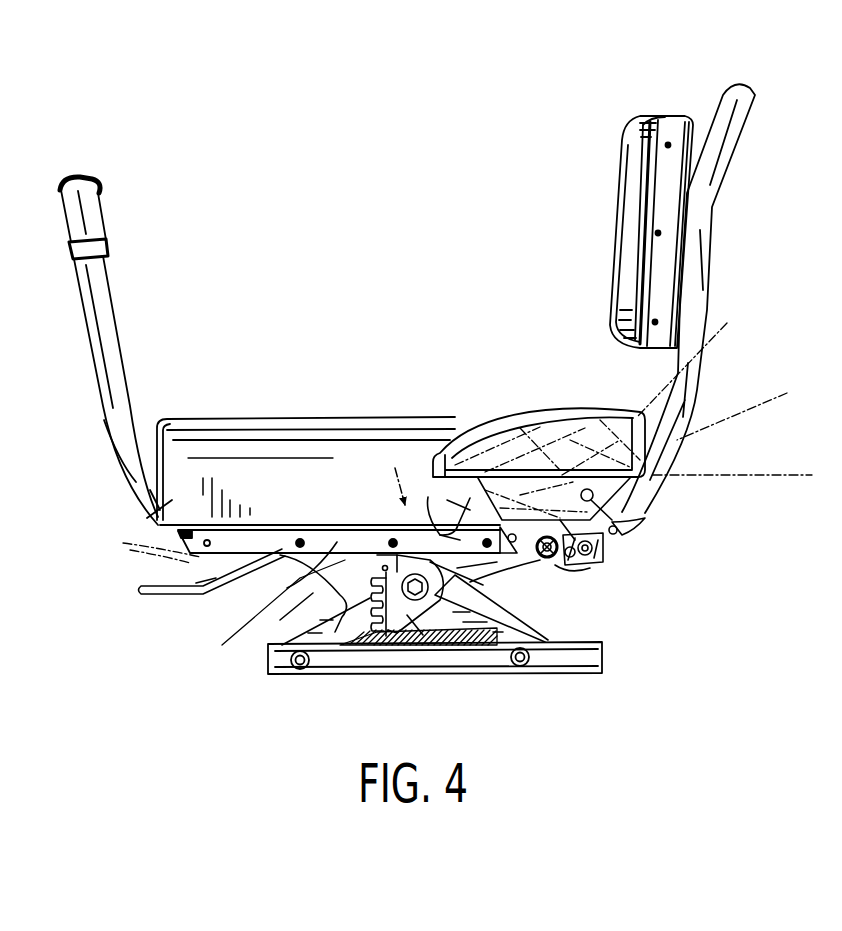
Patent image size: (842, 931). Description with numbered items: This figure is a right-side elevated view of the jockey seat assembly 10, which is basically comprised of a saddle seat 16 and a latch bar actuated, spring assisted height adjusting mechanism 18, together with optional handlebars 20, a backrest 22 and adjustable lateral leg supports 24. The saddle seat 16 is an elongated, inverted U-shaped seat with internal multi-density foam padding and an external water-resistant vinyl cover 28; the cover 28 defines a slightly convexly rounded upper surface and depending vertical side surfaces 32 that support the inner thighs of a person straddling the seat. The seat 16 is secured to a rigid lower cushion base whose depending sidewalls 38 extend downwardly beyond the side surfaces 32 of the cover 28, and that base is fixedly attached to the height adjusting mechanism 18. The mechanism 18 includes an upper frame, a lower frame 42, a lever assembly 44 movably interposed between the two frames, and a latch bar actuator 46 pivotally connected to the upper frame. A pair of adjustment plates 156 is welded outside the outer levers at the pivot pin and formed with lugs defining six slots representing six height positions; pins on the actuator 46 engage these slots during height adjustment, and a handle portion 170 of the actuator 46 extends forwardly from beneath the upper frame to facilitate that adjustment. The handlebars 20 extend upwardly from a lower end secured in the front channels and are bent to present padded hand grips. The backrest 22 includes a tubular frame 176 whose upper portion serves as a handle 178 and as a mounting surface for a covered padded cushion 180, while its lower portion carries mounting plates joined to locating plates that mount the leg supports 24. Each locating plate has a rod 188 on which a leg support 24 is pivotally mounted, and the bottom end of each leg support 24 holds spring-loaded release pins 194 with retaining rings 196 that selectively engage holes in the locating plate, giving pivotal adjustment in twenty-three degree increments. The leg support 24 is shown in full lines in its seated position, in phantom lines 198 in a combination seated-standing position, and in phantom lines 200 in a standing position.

The jockey seat assembly 10 is at (440, 250).
The saddle seat 16 is at (401, 456).
The height adjusting mechanism 18 is at (548, 630).
The handlebars 20 is at (125, 313).
The backrest 22 is at (598, 232).
The adjustable lateral leg supports 24 is at (533, 408).
The vinyl cover 28 is at (213, 450).
The side surfaces 32 is at (160, 526).
The sidewalls 38 is at (333, 545).
The lower frame 42 is at (333, 665).
The lever assembly 44 is at (330, 607).
The latch bar actuator 46 is at (202, 583).
The adjustment plates 156 is at (432, 640).
The handle portion 170 is at (140, 587).
The tubular frame 176 is at (724, 285).
The handle 178 is at (738, 98).
The covered padded cushion 180 is at (632, 190).
The rod 188 is at (620, 520).
The spring-loaded release pins 194 is at (620, 540).
The retaining rings 196 is at (547, 565).
The phantom lines 198 is at (435, 500).
The phantom lines 200 is at (510, 608).